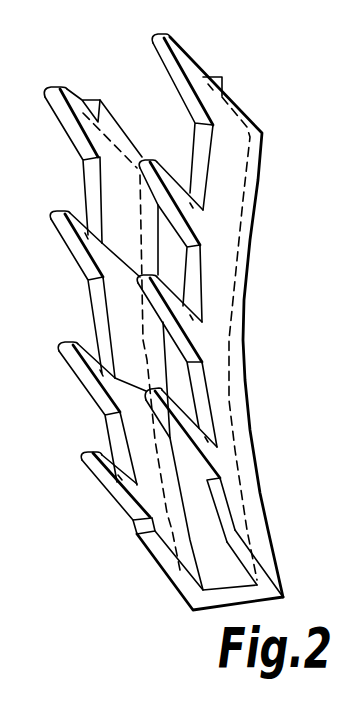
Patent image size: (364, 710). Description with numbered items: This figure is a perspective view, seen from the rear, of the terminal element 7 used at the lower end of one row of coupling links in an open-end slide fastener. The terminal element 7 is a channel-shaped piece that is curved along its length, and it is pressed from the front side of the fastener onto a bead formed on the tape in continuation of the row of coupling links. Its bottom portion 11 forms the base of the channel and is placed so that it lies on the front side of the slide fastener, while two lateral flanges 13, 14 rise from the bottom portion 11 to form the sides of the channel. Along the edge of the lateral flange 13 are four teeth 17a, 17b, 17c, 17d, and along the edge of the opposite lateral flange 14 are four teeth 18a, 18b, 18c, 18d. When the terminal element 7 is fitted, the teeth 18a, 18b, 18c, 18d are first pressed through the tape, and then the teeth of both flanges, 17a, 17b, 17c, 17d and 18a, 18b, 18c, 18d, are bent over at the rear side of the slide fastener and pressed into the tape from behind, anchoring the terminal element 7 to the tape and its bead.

The terminal element 7 is at (248, 355).
The bottom portion 11 is at (221, 578).
The lateral flange 13 is at (147, 488).
The lateral flange 14 is at (237, 490).
The tooth 17a is at (67, 117).
The tooth 17b is at (78, 247).
The tooth 17c is at (75, 372).
The tooth 17d is at (97, 480).
The tooth 18a is at (180, 60).
The tooth 18b is at (170, 190).
The tooth 18c is at (175, 310).
The tooth 18d is at (188, 423).